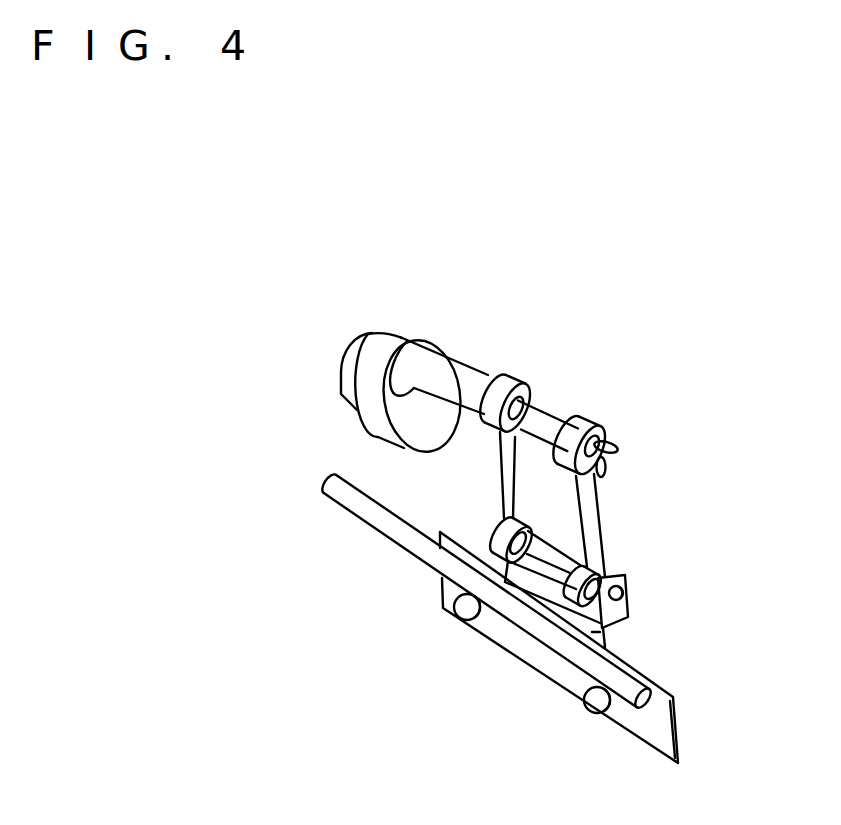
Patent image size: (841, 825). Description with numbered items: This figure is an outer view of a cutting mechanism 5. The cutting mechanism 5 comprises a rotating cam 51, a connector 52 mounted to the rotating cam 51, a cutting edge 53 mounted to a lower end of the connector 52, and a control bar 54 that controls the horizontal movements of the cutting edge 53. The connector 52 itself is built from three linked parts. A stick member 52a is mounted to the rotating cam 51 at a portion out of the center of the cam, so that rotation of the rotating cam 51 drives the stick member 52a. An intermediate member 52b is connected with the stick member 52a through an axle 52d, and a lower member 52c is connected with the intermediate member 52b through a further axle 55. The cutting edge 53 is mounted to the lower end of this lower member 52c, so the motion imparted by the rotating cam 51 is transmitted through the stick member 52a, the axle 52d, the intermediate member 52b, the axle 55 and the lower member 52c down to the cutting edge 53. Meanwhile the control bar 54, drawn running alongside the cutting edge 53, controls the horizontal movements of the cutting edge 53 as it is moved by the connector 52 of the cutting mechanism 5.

The cutting mechanism 5 is at (692, 362).
The rotating cam 51 is at (398, 343).
The connector 52 is at (650, 432).
The stick member 52a is at (462, 360).
The intermediate member 52b is at (597, 513).
The lower member 52c is at (604, 636).
The axle 52d is at (557, 401).
The cutting edge 53 is at (678, 738).
The control bar 54 is at (373, 520).
The axle 55 is at (628, 595).